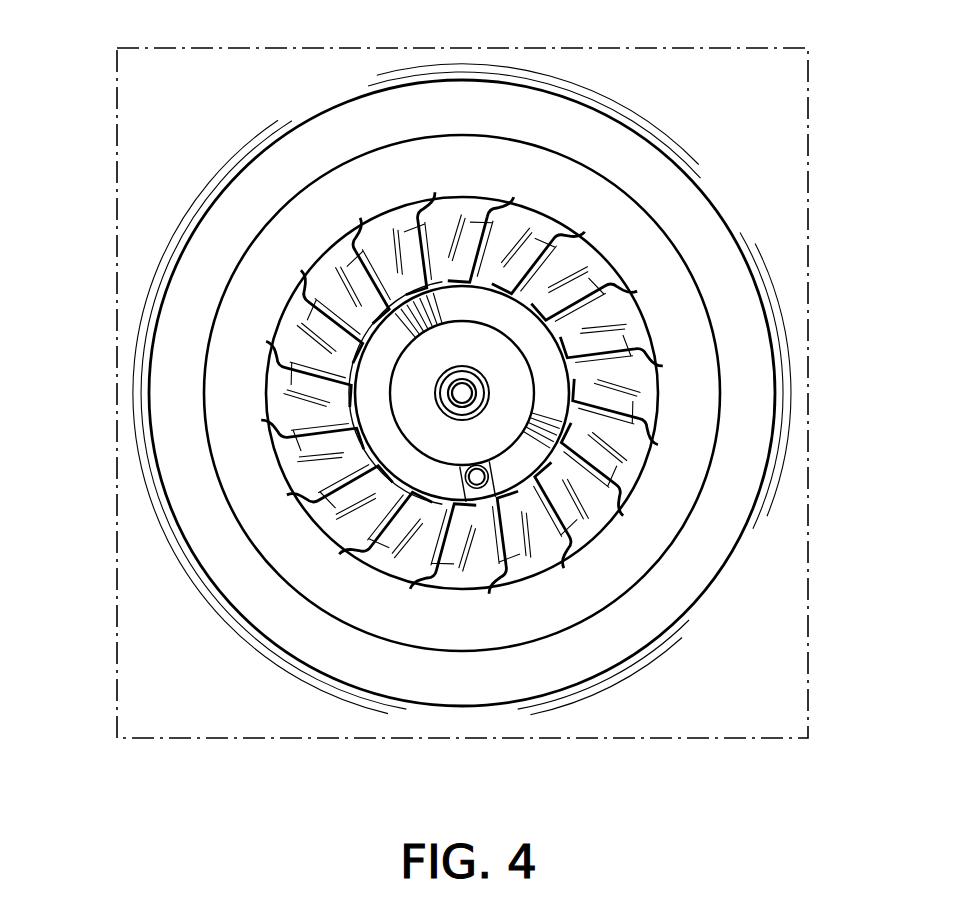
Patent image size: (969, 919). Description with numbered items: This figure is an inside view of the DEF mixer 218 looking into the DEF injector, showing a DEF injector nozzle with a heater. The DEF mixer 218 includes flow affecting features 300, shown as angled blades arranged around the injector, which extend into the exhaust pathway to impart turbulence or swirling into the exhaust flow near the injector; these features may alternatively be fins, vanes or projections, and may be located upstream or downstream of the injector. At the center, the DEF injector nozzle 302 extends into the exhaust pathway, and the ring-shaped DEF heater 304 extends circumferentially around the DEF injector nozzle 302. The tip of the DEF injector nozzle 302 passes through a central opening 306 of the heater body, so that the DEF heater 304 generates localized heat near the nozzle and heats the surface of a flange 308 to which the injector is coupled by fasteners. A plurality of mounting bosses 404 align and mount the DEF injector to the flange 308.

The DEF mixer 218 is at (730, 86).
The flow affecting features 300 is at (383, 240).
The DEF injector nozzle 302 is at (480, 388).
The DEF heater 304 is at (467, 312).
The central opening 306 is at (476, 404).
The flange 308 is at (518, 473).
The mounting bosses 404 is at (461, 478).